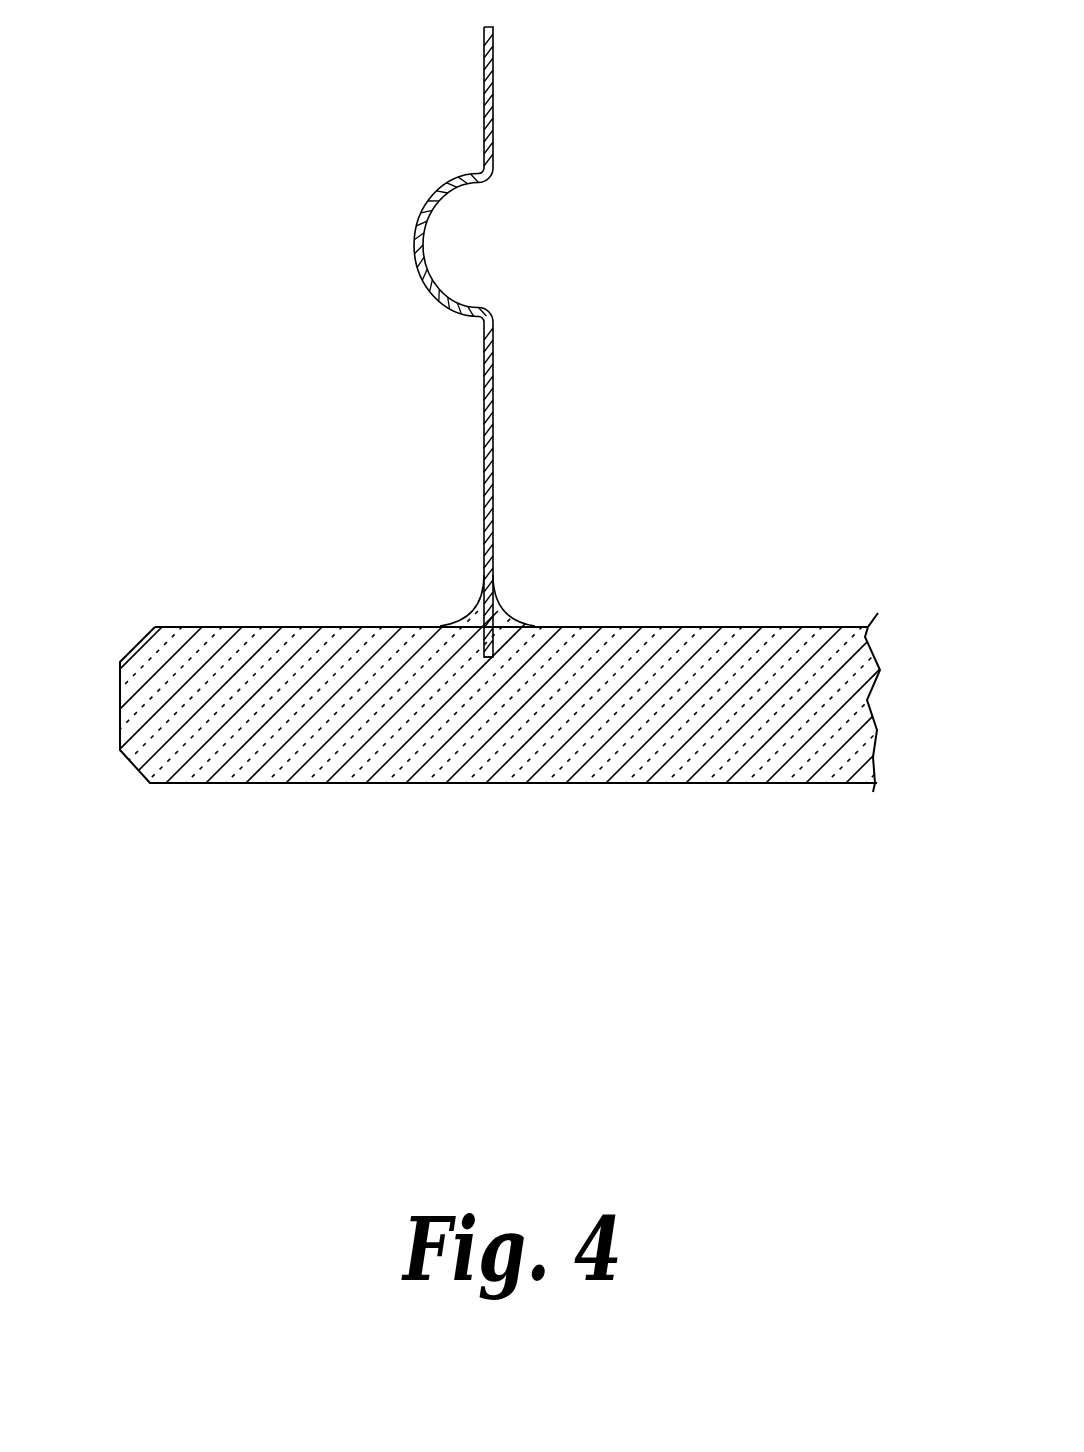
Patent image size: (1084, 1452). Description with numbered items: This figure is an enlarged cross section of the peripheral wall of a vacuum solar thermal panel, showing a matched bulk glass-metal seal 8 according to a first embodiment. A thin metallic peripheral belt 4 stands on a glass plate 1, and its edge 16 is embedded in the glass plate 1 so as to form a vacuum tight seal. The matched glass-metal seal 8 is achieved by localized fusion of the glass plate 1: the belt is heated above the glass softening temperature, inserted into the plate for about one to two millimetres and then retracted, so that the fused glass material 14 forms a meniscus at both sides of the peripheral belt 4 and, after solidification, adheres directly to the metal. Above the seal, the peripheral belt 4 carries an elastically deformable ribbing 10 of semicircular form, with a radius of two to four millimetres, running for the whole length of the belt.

The glass plate 1 is at (708, 745).
The metallic peripheral belt 4 is at (493, 393).
The matched glass-metal seal 8 is at (470, 590).
The ribbing 10 is at (413, 247).
The glass material 14 is at (462, 620).
The edge of the peripheral belt 16 is at (490, 658).